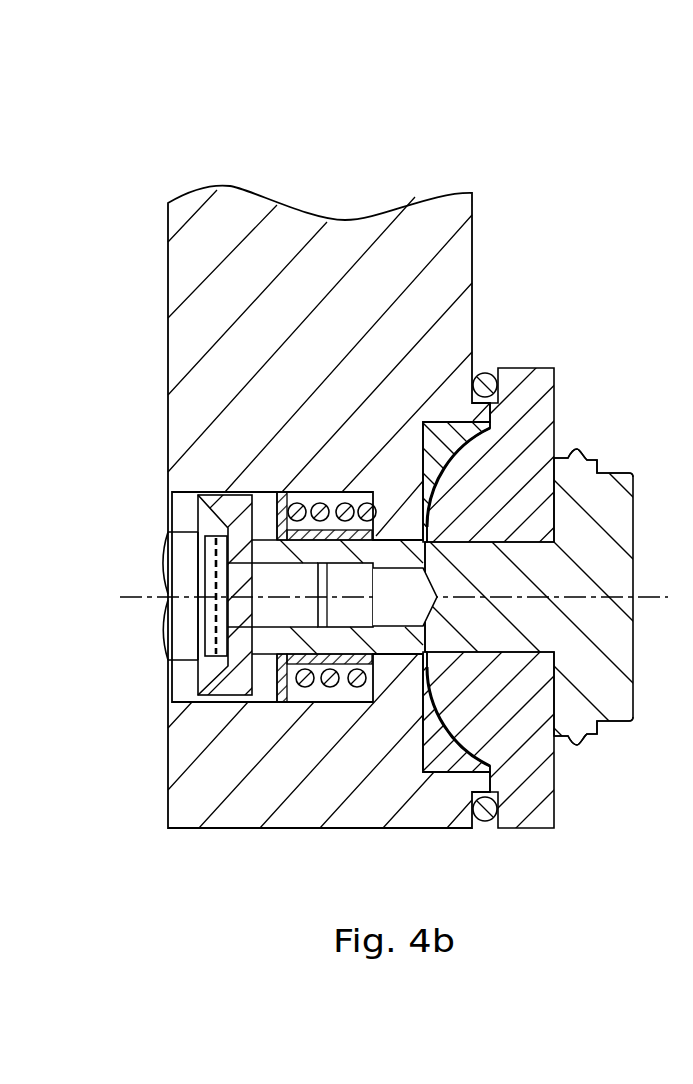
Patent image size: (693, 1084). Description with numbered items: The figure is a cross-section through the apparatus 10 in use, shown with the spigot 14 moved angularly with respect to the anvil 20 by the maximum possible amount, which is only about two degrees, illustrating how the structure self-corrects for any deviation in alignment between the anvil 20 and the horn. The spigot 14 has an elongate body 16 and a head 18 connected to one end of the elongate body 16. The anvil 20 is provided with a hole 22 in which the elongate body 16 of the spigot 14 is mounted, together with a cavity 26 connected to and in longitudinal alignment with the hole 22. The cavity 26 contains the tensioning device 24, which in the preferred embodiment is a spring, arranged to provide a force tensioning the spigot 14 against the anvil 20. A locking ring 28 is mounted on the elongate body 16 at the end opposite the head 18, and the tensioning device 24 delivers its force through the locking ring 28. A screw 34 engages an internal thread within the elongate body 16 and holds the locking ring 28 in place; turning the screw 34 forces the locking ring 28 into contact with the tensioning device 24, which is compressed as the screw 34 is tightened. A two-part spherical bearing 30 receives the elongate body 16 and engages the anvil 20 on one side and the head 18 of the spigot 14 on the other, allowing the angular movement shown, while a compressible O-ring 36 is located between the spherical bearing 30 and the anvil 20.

The apparatus 10 is at (247, 145).
The spigot 14 is at (612, 478).
The elongate body 16 is at (490, 638).
The head 18 is at (613, 693).
The anvil 20 is at (433, 213).
The hole 22 is at (385, 667).
The tensioning device 24 is at (332, 690).
The cavity 26 is at (164, 507).
The locking ring 28 is at (195, 677).
The two-part spherical bearing 30 is at (540, 378).
The screw 34 is at (178, 600).
The O-ring 36 is at (490, 372).